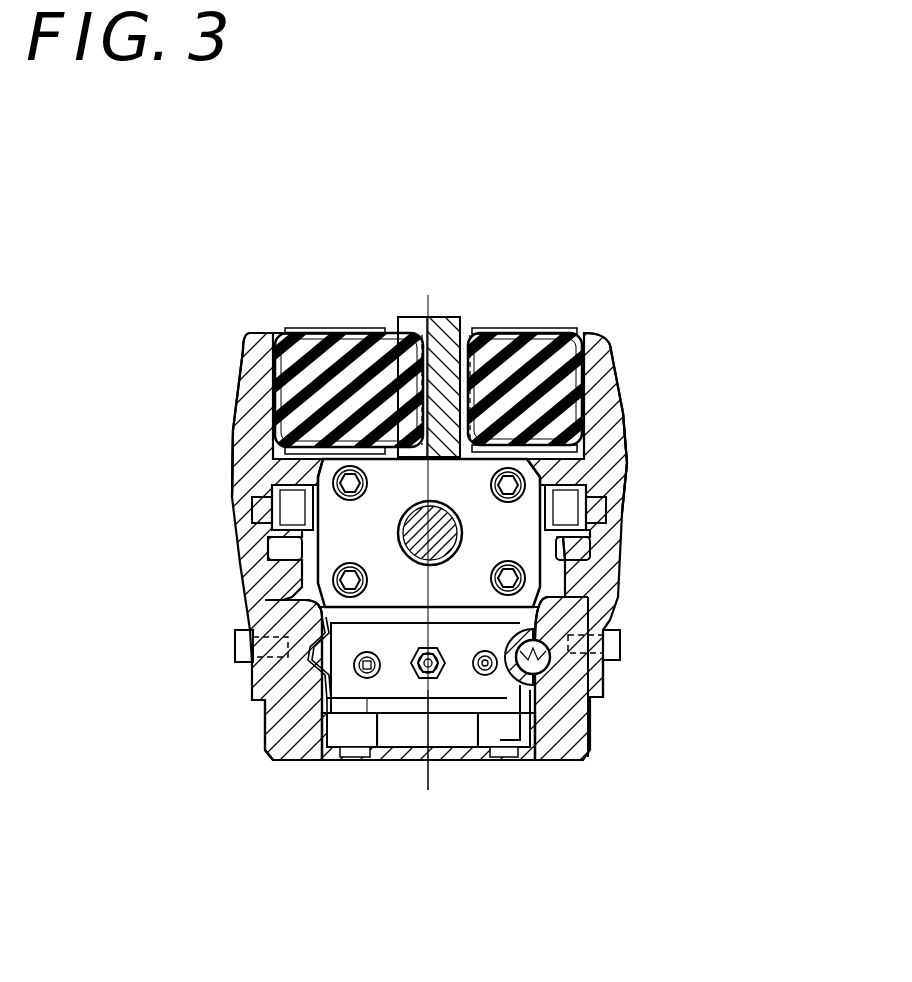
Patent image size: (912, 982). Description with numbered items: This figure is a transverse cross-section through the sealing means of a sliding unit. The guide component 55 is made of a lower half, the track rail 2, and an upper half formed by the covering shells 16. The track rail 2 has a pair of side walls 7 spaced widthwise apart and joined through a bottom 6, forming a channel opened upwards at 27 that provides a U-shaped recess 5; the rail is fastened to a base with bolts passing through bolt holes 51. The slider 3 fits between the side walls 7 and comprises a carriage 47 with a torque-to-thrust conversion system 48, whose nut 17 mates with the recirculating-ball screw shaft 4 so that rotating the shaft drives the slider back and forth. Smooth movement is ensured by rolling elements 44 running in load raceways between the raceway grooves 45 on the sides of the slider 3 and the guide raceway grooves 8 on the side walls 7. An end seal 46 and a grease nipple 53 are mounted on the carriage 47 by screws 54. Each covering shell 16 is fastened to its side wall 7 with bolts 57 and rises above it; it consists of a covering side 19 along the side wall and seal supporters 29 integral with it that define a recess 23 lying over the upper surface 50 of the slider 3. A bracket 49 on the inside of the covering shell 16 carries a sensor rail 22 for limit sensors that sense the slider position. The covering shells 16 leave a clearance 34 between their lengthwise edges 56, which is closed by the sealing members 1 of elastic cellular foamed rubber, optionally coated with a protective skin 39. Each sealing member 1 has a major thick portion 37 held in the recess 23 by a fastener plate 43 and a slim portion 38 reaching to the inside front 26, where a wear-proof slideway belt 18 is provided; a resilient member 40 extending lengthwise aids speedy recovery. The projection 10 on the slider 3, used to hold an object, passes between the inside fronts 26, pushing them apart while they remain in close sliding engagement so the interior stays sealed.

The sealing member 1 is at (313, 322).
The track rail 2 is at (578, 717).
The slider 3 is at (343, 673).
The recirculating-ball screw shaft 4 is at (450, 537).
The recess 5 is at (428, 675).
The bottom 6 is at (445, 740).
The side walls 7 is at (287, 710).
The guide raceway grooves 8 is at (545, 680).
The projection 10 is at (452, 317).
The covering shell 16 is at (227, 490).
The nut 17 is at (265, 465).
The wear-proof slideway belt 18 is at (420, 317).
The covering side 19 is at (247, 547).
The sensor rail 22 is at (240, 507).
The recess 23 is at (277, 320).
The inside fronts 26 is at (438, 313).
The upward opening 27 is at (575, 600).
The seal supporters 29 is at (342, 322).
The clearance 34 is at (390, 322).
The major thick portion 37 is at (290, 333).
The slim portion 38 is at (393, 318).
The protective skin 39 is at (275, 325).
The resilient member 40 is at (500, 318).
The fastener plate 43 is at (242, 380).
The rolling elements 44 is at (578, 625).
The raceway grooves 45 is at (520, 697).
The end seal 46 is at (460, 675).
The carriage 47 is at (393, 680).
The torque-to-thrust conversion system 48 is at (360, 673).
The bracket 49 is at (270, 560).
The upper surface 50 is at (623, 450).
The bolt holes 51 is at (525, 697).
The grease nipple 53 is at (427, 783).
The screws 54 is at (403, 583).
The guide component 55 is at (607, 717).
The lengthwise edges 56 is at (470, 320).
The bolts 57 is at (236, 644).